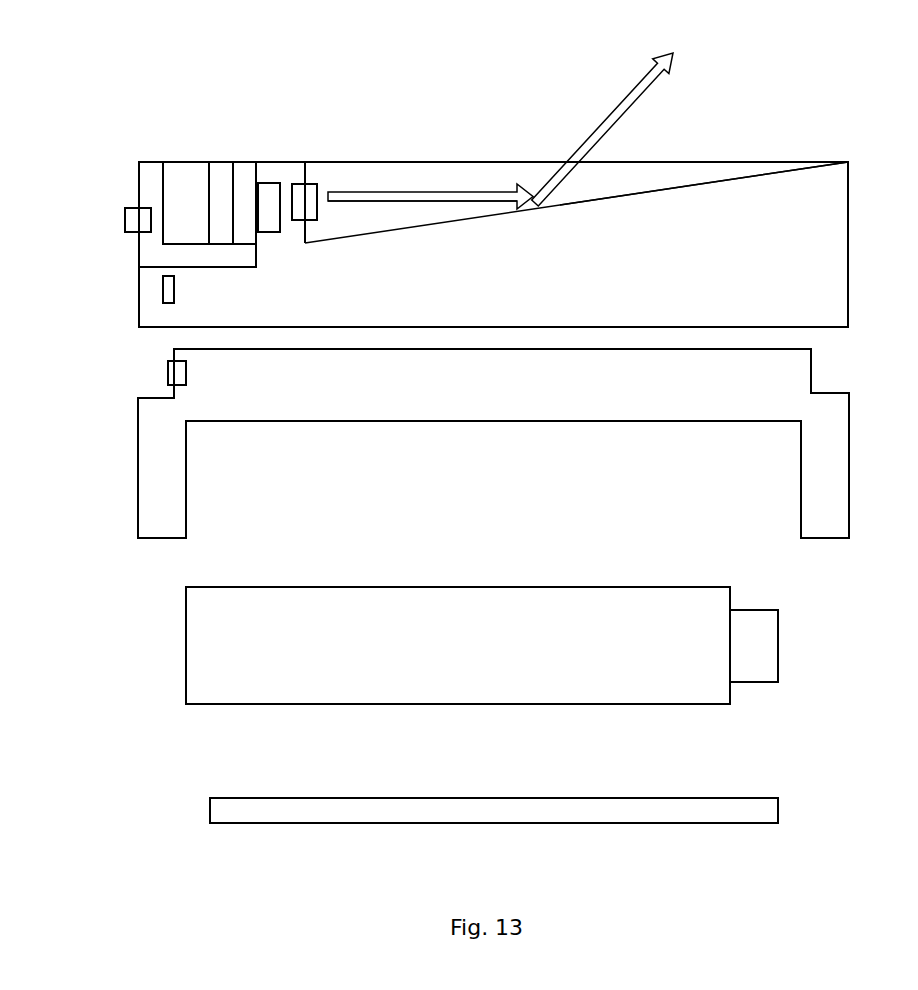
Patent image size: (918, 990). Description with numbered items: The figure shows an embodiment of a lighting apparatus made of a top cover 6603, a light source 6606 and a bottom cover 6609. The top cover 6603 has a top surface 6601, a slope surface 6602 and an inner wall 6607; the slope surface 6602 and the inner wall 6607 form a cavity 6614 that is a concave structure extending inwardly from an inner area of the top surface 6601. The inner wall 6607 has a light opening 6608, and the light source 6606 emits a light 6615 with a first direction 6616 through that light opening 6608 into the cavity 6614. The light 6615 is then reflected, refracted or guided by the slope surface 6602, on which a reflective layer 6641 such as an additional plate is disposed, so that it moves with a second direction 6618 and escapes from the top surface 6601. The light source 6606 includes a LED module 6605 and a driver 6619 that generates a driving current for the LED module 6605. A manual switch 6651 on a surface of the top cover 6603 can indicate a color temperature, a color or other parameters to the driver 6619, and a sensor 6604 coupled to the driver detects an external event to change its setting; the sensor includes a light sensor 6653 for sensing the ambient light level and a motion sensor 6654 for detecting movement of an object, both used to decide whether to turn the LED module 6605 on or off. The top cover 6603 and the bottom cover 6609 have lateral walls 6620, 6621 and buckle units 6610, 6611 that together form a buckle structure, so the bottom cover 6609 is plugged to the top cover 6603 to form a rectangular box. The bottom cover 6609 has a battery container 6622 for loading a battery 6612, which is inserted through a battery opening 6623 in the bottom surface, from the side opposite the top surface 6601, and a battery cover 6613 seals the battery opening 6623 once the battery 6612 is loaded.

The top surface 6601 is at (688, 162).
The slope surface 6602 is at (557, 210).
The top cover 6603 is at (140, 193).
The sensor 6604 is at (192, 175).
The LED module 6605 is at (273, 195).
The light source 6606 is at (247, 175).
The inner wall 6607 is at (305, 243).
The light opening 6608 is at (320, 203).
The bottom cover 6609 is at (187, 463).
The buckle unit 6610 is at (163, 290).
The buckle unit 6611 is at (173, 372).
The battery 6612 is at (530, 597).
The battery cover 6613 is at (548, 805).
The cavity 6614 is at (608, 177).
The light 6615 is at (407, 192).
The first direction 6616 is at (447, 198).
The second direction 6618 is at (675, 65).
The driver 6619 is at (160, 251).
The lateral wall 6620 is at (162, 312).
The lateral wall 6621 is at (148, 390).
The battery container 6622 is at (405, 453).
The battery opening 6623 is at (732, 503).
The reflective layer 6641 is at (727, 177).
The manual switch 6651 is at (128, 215).
The light sensor 6653 is at (175, 162).
The motion sensor 6654 is at (187, 244).